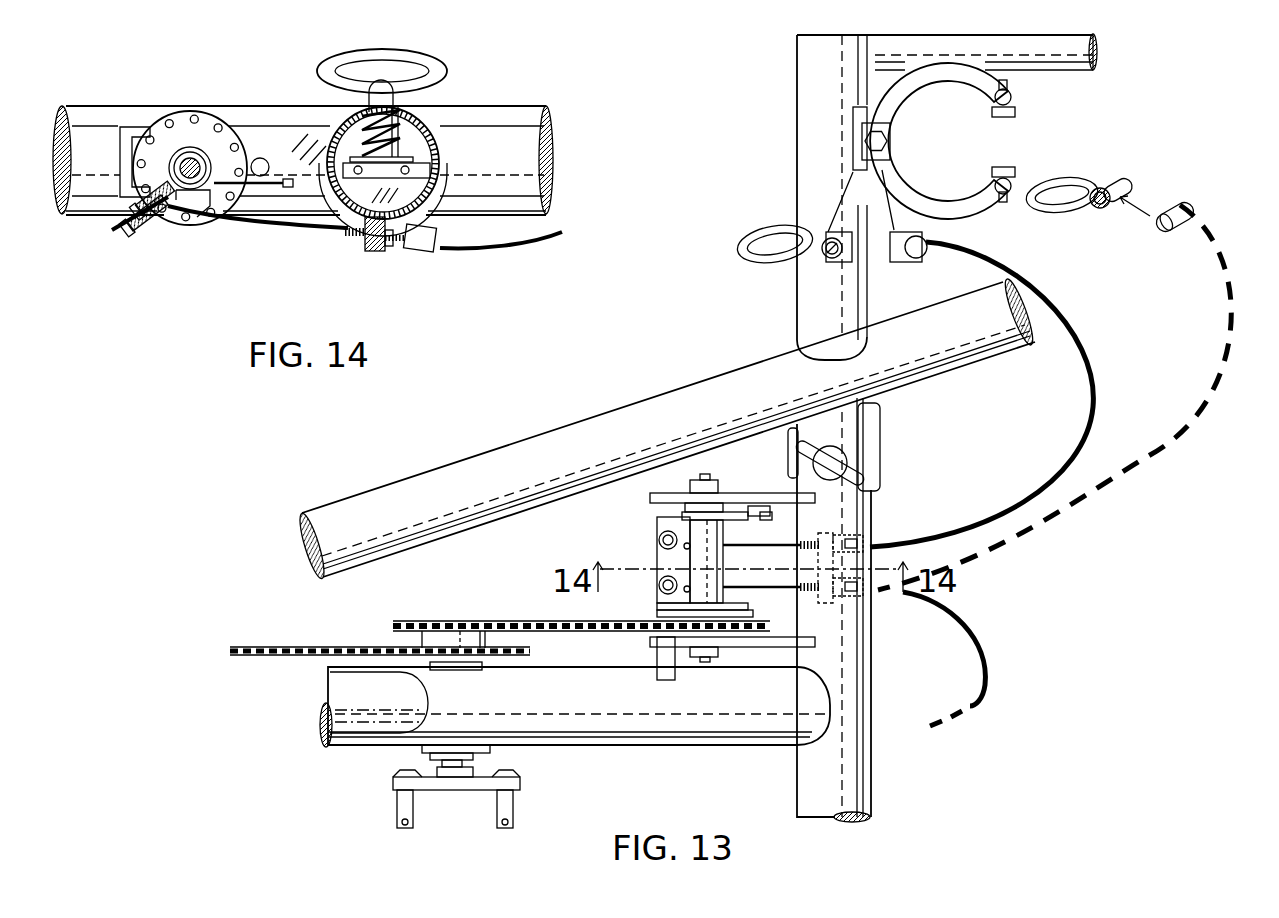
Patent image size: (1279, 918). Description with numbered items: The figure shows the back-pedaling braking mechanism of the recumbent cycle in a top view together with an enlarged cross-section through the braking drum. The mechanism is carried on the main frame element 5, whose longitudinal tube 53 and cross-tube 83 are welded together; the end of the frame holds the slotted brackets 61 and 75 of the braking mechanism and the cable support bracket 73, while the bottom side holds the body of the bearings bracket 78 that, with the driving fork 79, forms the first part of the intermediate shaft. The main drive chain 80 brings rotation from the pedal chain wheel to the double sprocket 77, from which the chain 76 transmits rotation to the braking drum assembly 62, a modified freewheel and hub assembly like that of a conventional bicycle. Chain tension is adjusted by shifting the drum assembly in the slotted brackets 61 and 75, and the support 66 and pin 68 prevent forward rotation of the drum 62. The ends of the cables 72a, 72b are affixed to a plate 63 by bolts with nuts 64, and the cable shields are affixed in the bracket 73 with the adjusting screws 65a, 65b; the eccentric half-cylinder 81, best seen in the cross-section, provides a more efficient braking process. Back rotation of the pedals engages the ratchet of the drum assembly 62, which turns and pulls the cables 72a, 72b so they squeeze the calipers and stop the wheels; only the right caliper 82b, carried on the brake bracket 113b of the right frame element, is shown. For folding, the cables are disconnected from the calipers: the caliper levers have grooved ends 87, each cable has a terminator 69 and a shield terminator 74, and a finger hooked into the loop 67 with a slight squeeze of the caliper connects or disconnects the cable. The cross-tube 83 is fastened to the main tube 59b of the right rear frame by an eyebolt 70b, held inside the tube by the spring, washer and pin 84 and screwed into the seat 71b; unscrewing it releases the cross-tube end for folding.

In FIG. 13, the main frame element 5 is at (908, 757).
In FIG. 13, the longitudinal tube 53 is at (621, 723).
In FIG. 13, the main tube 59b is at (540, 443).
In FIG. 14, the slotted bracket 61 is at (128, 140).
In FIG. 13, the slotted bracket 61 is at (722, 499).
In FIG. 14, the braking drum assembly 62 is at (188, 132).
In FIG. 13, the braking drum assembly 62 is at (700, 530).
In FIG. 14, the plate 63 is at (140, 228).
In FIG. 13, the plate 63 is at (666, 560).
In FIG. 14, the bolts with nuts 64 is at (163, 237).
In FIG. 13, the bolts with nuts 64 is at (652, 544).
In FIG. 13, the adjusting screw 65a is at (875, 598).
In FIG. 14, the adjusting screw 65b is at (418, 240).
In FIG. 13, the adjusting screw 65b is at (863, 540).
In FIG. 14, the support 66 is at (279, 190).
In FIG. 13, the support 66 is at (771, 553).
In FIG. 13, the loop 67 is at (752, 252).
In FIG. 14, the pin 68 is at (257, 160).
In FIG. 13, the pin 68 is at (757, 506).
In FIG. 13, the terminator 69 is at (1104, 212).
In FIG. 14, the eyebolt 70b is at (435, 65).
In FIG. 13, the eyebolt 70b is at (857, 478).
In FIG. 14, the seat 71b is at (430, 200).
In FIG. 13, the seat 71b is at (879, 425).
In FIG. 13, the cable 72a is at (985, 692).
In FIG. 14, the cable 72b is at (527, 240).
In FIG. 13, the cable 72b is at (1091, 405).
In FIG. 14, the cable support bracket 73 is at (370, 238).
In FIG. 13, the cable support bracket 73 is at (840, 530).
In FIG. 13, the shield terminator 74 is at (1170, 224).
In FIG. 13, the slotted bracket 75 is at (775, 641).
In FIG. 13, the chain 76 is at (508, 622).
In FIG. 13, the double sprocket 77 is at (436, 637).
In FIG. 13, the bearings bracket 78 is at (483, 752).
In FIG. 13, the driving fork 79 is at (520, 783).
In FIG. 13, the chain 80 is at (335, 648).
In FIG. 14, the eccentric half-cylinder 81 is at (205, 216).
In FIG. 13, the caliper 82b is at (897, 83).
In FIG. 14, the cross-tube 83 is at (348, 120).
In FIG. 13, the cross-tube 83 is at (838, 780).
In FIG. 14, the spring, washer and pin 84 is at (400, 140).
In FIG. 13, the grooved end 87 is at (853, 252).
In FIG. 13, the brake bracket 113b is at (860, 117).